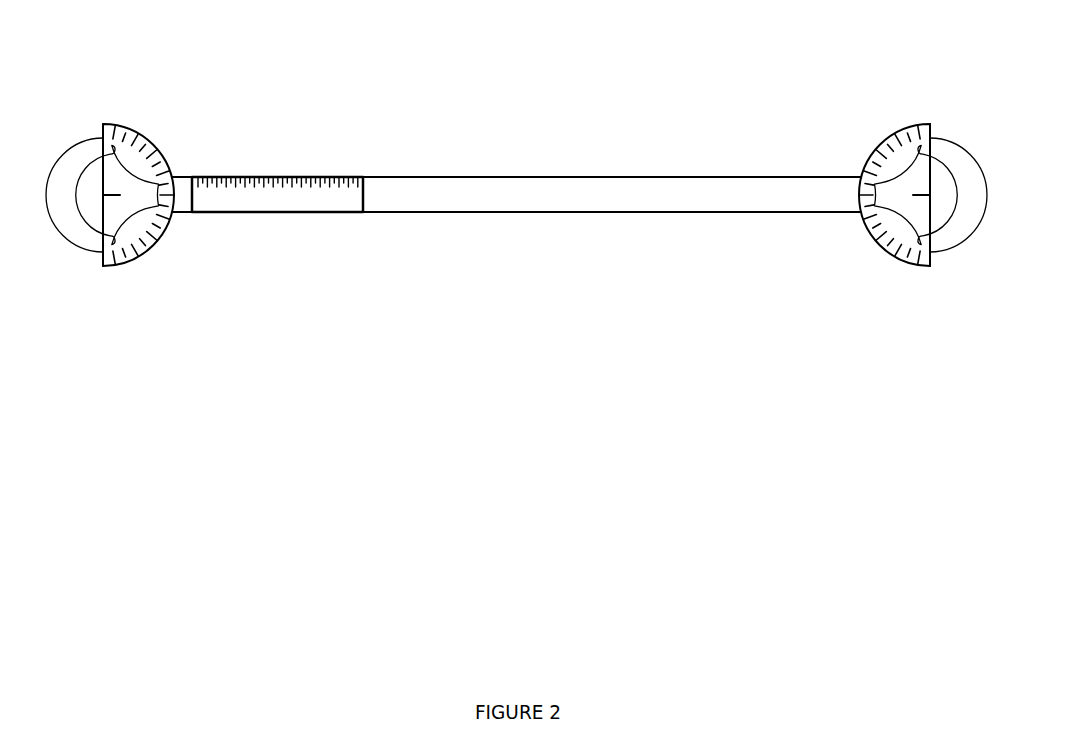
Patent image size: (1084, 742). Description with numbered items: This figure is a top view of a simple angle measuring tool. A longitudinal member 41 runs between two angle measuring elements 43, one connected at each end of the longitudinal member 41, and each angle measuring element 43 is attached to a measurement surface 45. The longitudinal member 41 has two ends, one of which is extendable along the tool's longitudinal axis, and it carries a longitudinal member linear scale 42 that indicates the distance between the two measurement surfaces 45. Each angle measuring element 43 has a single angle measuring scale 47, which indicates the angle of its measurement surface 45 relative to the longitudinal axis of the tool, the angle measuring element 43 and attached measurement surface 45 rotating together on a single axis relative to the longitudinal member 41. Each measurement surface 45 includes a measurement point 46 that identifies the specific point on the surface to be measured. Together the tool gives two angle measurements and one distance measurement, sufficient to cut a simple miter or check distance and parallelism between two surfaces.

The longitudinal member 41 is at (462, 177).
The longitudinal member linear scale 42 is at (274, 177).
The angle measuring element 43 is at (114, 126).
The measurement surface 45 is at (101, 228).
The measurement point 46 is at (105, 193).
The angle measuring scale 47 is at (150, 252).